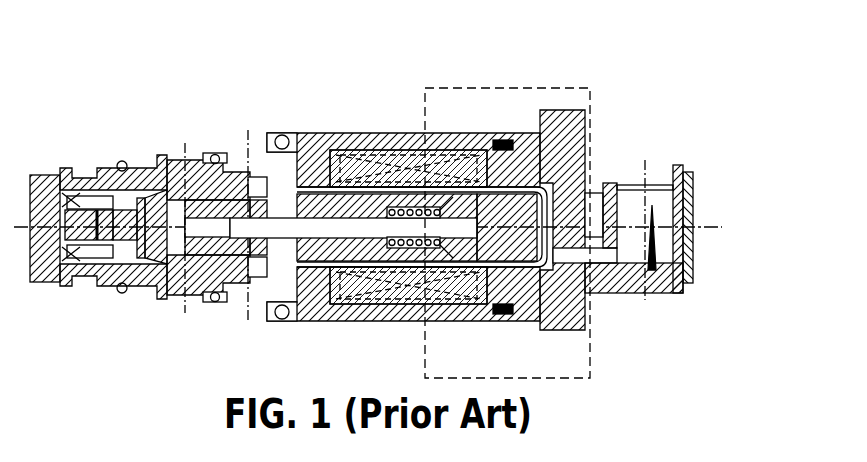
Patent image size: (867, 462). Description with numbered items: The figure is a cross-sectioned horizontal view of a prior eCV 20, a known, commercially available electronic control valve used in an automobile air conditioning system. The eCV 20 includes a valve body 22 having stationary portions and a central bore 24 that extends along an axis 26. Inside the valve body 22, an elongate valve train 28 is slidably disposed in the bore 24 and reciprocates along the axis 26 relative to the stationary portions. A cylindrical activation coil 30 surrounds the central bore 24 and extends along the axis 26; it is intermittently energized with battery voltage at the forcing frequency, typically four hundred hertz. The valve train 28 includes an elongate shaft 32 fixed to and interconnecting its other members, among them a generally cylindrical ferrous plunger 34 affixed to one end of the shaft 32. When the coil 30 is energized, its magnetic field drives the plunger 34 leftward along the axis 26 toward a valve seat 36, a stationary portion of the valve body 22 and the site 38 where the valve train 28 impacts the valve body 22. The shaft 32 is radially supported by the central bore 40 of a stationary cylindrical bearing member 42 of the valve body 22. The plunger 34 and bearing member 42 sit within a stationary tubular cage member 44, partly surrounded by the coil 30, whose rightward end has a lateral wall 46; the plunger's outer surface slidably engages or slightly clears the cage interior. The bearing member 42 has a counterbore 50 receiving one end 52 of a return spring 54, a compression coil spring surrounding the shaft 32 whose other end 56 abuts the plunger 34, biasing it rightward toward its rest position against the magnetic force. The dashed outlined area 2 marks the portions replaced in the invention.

The outlined area 2 is at (591, 372).
The prior eCV 20 is at (146, 60).
The valve body 22 is at (158, 300).
The central bore 24 is at (358, 200).
The axis 26 is at (705, 226).
The valve train 28 is at (220, 208).
The activation coil 30 is at (372, 158).
The shaft 32 is at (247, 292).
The plunger 34 is at (497, 262).
The valve seat 36 is at (181, 208).
The site 38 is at (155, 292).
The central bore 40 is at (352, 200).
The bearing member 42 is at (285, 318).
The cage member 44 is at (521, 306).
The lateral wall 46 is at (551, 208).
The counterbore 50 is at (410, 200).
The one end of return spring 52 is at (410, 250).
The return spring 54 is at (385, 247).
The other end of return spring 56 is at (455, 200).